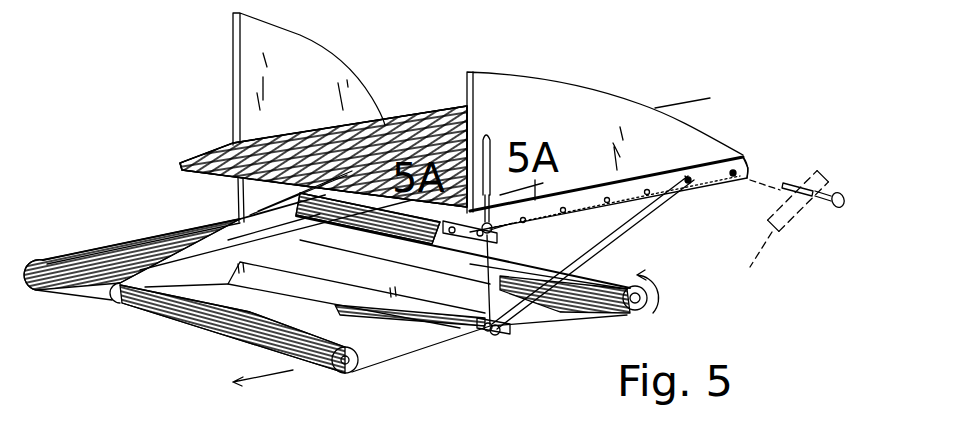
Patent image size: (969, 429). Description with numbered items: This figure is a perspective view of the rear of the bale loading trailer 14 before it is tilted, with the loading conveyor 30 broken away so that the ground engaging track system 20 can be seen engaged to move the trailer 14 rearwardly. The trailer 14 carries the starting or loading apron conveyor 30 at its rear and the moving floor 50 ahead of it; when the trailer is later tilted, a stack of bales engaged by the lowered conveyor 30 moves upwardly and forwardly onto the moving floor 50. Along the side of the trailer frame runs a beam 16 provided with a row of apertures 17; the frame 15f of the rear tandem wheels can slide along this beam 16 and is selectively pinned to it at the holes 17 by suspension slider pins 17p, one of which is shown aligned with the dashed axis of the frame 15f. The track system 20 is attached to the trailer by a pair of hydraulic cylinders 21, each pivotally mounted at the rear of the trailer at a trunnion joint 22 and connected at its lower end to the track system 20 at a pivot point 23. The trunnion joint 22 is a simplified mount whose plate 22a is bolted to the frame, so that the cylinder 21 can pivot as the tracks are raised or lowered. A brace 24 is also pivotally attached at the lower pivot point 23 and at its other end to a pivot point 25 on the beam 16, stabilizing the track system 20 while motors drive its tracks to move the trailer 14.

The trailer 14 is at (580, 92).
The frame of the tandem wheels 15f is at (748, 241).
The beam 16 is at (630, 183).
The apertures 17 is at (745, 155).
The suspension slider pin 17p is at (831, 202).
The ground engaging track system 20 is at (98, 305).
The hydraulic cylinder 21 is at (489, 138).
The trunnion joint 22 is at (505, 232).
The plate 22a is at (236, 399).
The pivot point 23 is at (480, 335).
The brace 24 is at (630, 232).
The pivot point 25 is at (680, 196).
The loading conveyor 30 is at (210, 150).
The moving floor 50 is at (370, 125).